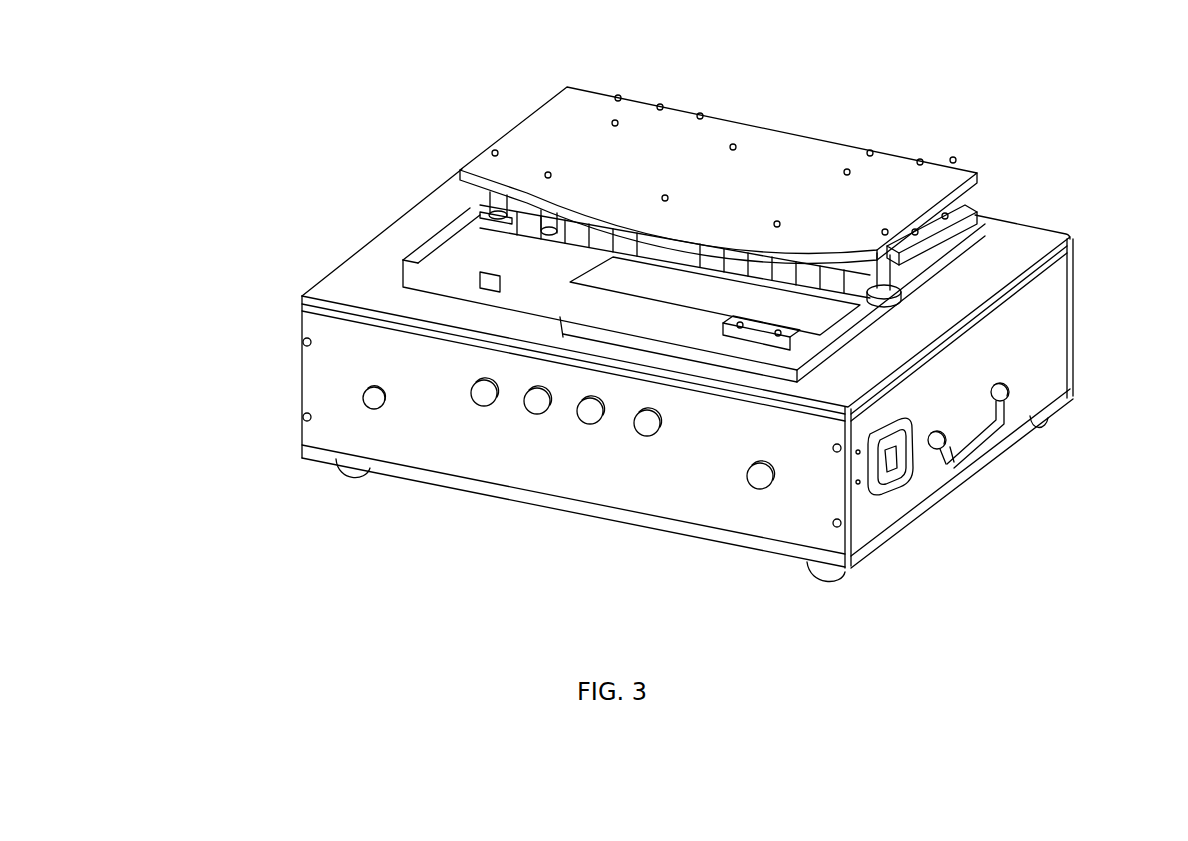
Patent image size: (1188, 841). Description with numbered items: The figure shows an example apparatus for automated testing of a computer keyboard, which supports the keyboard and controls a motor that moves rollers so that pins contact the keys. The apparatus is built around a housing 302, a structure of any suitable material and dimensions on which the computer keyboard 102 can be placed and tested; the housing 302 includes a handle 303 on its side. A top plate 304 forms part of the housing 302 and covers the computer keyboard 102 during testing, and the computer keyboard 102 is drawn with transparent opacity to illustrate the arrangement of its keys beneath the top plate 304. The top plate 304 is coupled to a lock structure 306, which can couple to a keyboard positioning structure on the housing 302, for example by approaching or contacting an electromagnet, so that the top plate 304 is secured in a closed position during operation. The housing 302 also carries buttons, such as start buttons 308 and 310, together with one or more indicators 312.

The computer keyboard 102 is at (778, 303).
The housing 302 is at (872, 512).
The handle 303 is at (970, 453).
The top plate 304 is at (780, 157).
The lock structure 306 is at (885, 288).
The start button 308 is at (763, 489).
The start button 310 is at (372, 398).
The indicators 312 is at (692, 418).